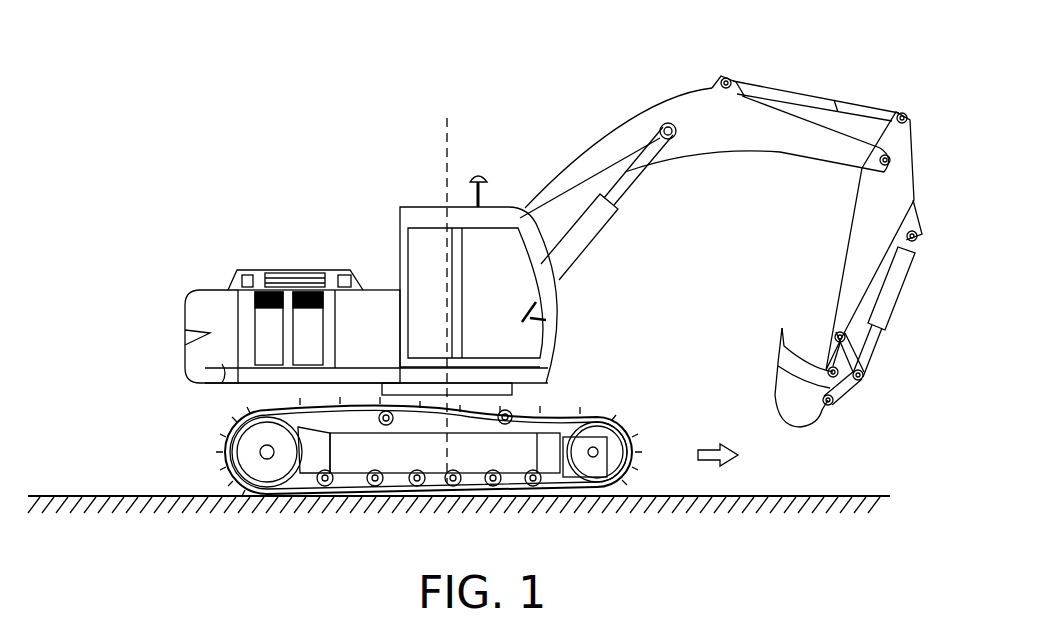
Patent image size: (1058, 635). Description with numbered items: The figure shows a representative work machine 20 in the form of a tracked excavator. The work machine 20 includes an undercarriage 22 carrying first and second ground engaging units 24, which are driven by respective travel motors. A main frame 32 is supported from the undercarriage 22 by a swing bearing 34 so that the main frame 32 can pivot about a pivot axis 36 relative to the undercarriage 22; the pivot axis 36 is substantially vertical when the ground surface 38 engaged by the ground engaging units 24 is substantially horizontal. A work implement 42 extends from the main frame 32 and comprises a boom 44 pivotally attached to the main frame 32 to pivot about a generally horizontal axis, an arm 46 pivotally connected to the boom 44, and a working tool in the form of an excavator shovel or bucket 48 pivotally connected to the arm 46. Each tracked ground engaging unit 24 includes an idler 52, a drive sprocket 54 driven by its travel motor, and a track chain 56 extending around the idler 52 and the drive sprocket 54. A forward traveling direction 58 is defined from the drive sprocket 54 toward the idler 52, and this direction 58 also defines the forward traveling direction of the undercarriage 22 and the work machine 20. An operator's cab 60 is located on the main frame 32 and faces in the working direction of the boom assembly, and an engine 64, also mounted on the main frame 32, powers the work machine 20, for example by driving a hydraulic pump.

The work machine 20 is at (797, 44).
The undercarriage 22 is at (365, 462).
The ground engaging units 24 is at (224, 452).
The main frame 32 is at (349, 332).
The swing bearing 34 is at (515, 392).
The pivot axis 36 is at (447, 118).
The ground surface 38 is at (222, 495).
The work implement 42 is at (592, 119).
The boom 44 is at (672, 147).
The arm 46 is at (862, 232).
The excavator shovel (bucket) 48 is at (795, 420).
The idler 52 is at (627, 420).
The drive sprocket 54 is at (300, 480).
The track chain 56 is at (505, 492).
The forward traveling direction 58 is at (712, 447).
The operator's cab 60 is at (428, 213).
The engine 64 is at (236, 280).